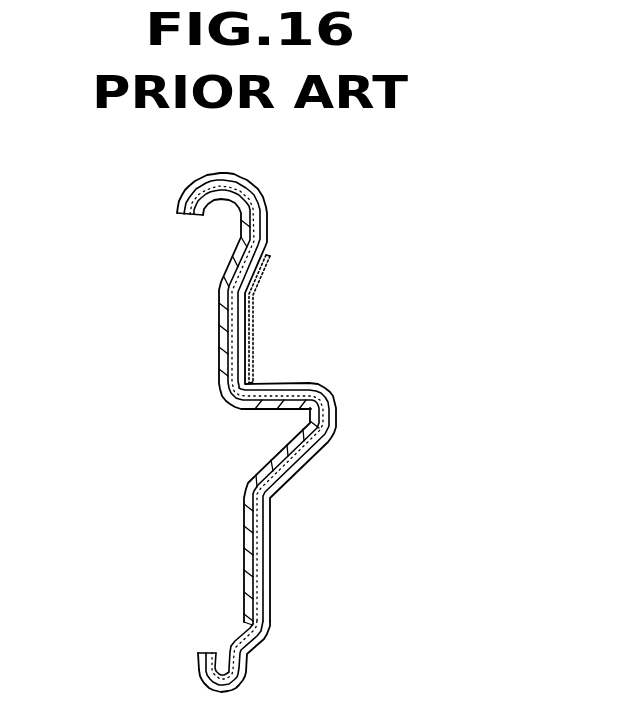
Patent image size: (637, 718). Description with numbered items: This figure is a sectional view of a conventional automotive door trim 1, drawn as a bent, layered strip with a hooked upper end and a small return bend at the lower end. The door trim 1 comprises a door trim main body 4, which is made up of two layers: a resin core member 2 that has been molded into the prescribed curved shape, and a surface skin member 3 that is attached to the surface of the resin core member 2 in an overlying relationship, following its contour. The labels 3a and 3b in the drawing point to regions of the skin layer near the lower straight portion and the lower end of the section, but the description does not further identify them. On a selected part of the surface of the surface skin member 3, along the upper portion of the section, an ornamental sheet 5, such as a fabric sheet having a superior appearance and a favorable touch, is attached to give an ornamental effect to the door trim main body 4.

The automotive door trim 1 is at (310, 247).
The resin core member 2 is at (243, 497).
The surface skin member 3 is at (243, 572).
The covering layer portion 3a is at (268, 588).
The covering layer end portion 3b is at (267, 622).
The door trim main body 4 is at (98, 478).
The ornamental sheet 5 is at (253, 300).